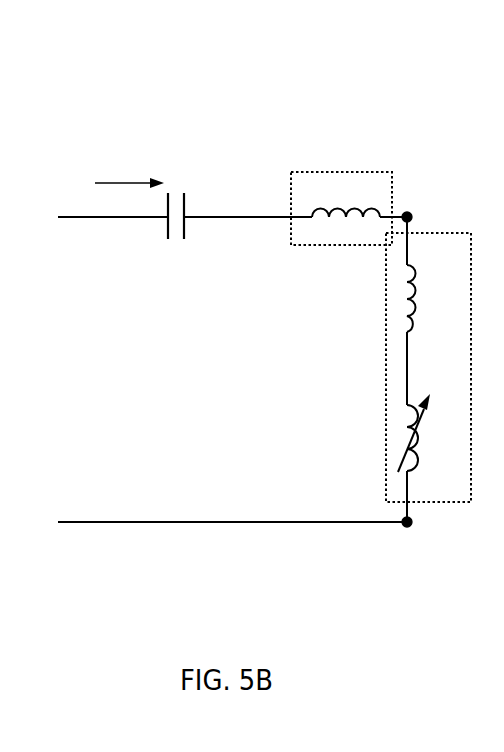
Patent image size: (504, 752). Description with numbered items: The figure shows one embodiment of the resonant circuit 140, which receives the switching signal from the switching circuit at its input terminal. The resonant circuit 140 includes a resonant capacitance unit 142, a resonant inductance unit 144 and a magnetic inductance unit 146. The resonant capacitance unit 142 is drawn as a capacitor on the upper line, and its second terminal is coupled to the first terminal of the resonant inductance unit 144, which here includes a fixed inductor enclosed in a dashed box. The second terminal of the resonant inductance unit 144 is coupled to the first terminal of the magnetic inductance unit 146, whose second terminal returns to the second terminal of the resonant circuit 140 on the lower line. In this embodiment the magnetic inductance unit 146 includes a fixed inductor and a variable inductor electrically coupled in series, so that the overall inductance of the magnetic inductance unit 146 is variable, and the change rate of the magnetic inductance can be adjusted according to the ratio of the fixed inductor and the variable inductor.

The resonant circuit 140 is at (44, 43).
The resonant capacitance unit 142 is at (168, 240).
The resonant inductance unit 144 is at (322, 247).
The magnetic inductance unit 146 is at (386, 412).